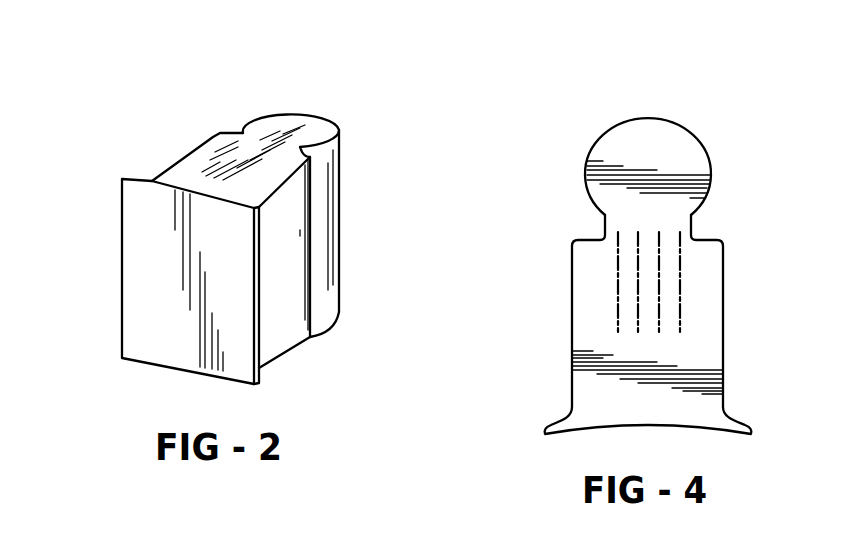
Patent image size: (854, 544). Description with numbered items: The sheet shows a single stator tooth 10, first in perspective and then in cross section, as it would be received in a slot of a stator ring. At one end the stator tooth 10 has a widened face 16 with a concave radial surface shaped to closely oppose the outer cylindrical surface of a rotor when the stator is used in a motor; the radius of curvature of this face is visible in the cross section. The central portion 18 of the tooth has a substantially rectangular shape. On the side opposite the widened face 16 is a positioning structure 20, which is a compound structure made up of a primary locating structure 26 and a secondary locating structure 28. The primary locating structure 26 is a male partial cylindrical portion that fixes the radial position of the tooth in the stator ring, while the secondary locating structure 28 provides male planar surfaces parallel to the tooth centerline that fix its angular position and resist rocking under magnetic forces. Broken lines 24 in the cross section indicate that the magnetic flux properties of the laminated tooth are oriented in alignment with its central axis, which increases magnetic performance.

In FIG. 2, the stator tooth 10 is at (86, 156).
In FIG. 2, the widened face 16 is at (175, 340).
In FIG. 4, the widened face 16 is at (623, 427).
In FIG. 2, the central portion 18 is at (212, 170).
In FIG. 4, the central portion 18 is at (597, 375).
In FIG. 2, the positioning structure 20 is at (346, 109).
In FIG. 4, the positioning structure 20 is at (556, 141).
In FIG. 4, the broken lines 24 is at (617, 297).
In FIG. 4, the primary locating structure 26 is at (680, 122).
In FIG. 4, the secondary locating structure 28 is at (588, 240).